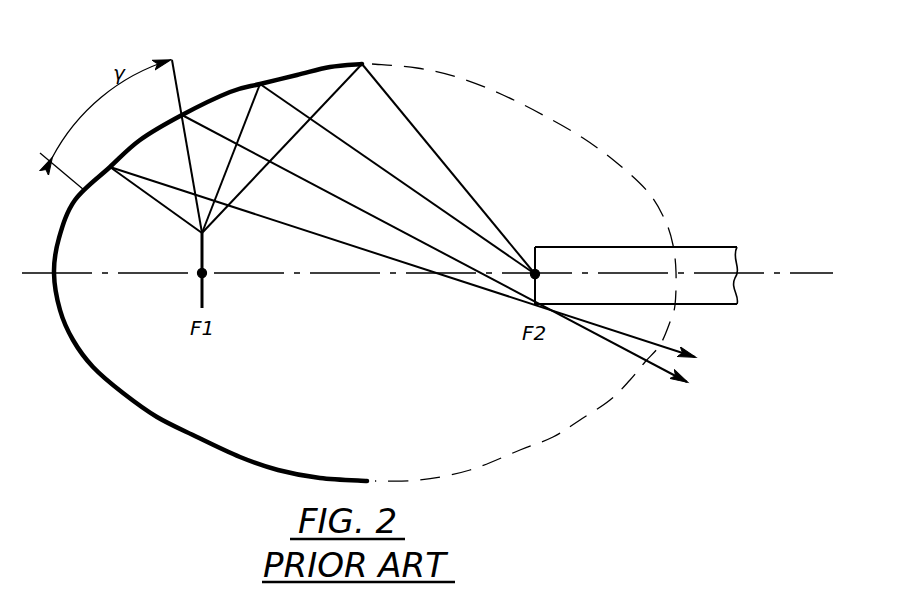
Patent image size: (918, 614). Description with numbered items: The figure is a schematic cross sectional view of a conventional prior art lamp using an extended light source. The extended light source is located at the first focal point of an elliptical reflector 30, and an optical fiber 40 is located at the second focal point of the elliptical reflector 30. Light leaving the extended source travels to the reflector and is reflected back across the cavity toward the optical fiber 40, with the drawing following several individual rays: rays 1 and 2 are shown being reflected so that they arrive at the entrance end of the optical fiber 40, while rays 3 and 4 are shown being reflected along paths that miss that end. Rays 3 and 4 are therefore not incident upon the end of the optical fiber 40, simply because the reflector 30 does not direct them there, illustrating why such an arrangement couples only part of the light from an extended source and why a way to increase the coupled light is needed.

The elliptical reflector 30 is at (230, 88).
The optical fiber 40 is at (712, 247).
The light ray 1 is at (368, 169).
The light ray 2 is at (368, 179).
The ray 3 is at (439, 232).
The ray 4 is at (414, 272).